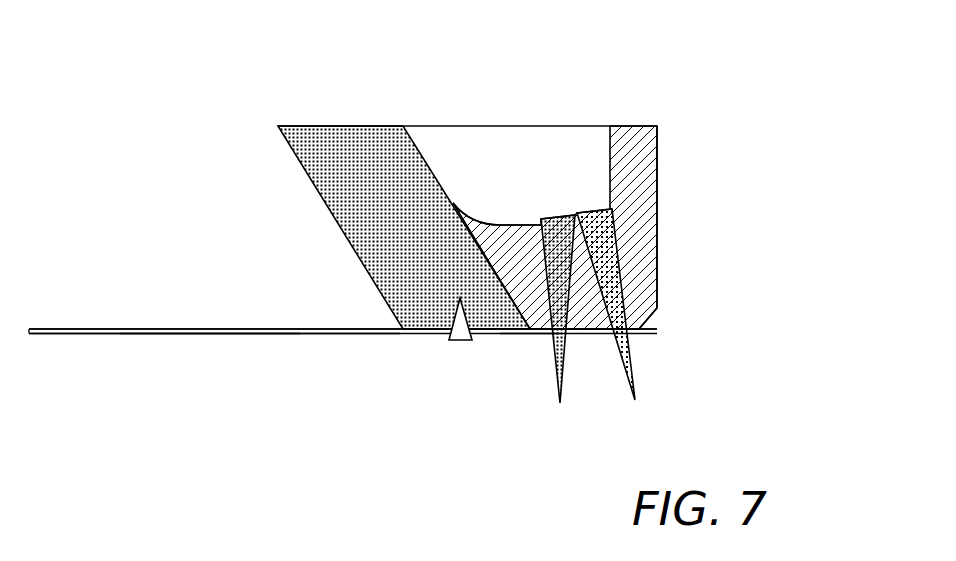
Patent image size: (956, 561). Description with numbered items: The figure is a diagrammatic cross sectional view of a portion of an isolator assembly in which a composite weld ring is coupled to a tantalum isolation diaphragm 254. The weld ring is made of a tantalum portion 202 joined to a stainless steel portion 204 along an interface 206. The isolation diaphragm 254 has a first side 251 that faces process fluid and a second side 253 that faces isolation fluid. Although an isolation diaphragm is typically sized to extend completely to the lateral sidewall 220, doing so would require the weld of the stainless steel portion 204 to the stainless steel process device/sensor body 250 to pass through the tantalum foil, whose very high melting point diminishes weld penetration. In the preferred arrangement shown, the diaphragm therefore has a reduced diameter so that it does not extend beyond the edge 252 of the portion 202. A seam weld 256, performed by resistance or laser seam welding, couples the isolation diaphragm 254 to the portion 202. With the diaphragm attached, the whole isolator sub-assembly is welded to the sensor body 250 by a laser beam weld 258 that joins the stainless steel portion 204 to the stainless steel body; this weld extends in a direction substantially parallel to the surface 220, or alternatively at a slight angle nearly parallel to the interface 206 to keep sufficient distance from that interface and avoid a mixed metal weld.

The portion 202 is at (340, 126).
The stainless steel portion 204 is at (668, 192).
The interface 206 is at (462, 197).
The lateral sidewall 220 is at (657, 248).
The process device/sensor body 250 is at (683, 340).
The first side 251 is at (157, 329).
The edge 252 is at (533, 334).
The second side 253 is at (238, 333).
The isolation diaphragm 254 is at (112, 333).
The seam weld 256 is at (455, 341).
The laser beam weld 258 is at (581, 203).